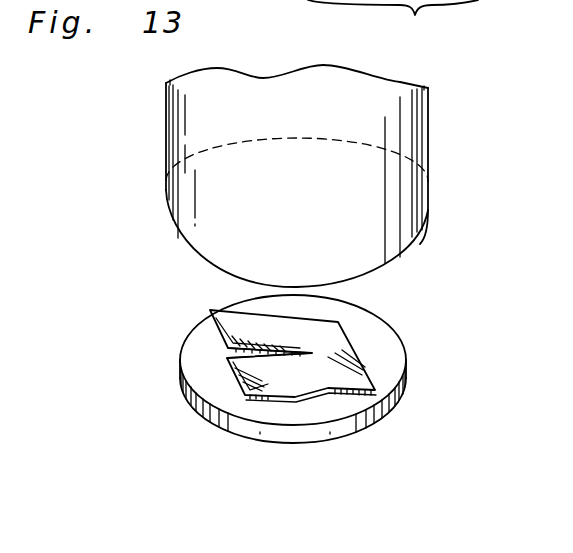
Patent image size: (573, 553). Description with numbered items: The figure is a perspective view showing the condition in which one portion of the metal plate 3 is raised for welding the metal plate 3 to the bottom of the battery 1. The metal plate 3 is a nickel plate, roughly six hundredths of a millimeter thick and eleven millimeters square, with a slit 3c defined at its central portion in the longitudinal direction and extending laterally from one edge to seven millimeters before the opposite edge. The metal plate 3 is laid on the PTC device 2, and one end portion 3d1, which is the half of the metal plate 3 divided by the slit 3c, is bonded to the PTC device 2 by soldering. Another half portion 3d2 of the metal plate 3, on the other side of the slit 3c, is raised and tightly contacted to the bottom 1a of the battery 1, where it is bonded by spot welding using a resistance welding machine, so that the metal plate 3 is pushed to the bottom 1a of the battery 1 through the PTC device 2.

The battery 1 is at (403, 142).
The bottom of the battery 1a is at (421, 242).
The PTC device 2 is at (426, 42).
The metal plate 3 is at (342, 373).
The slit 3c is at (243, 407).
The one end portion 3d1 is at (243, 407).
The another half portion 3d2 is at (277, 345).